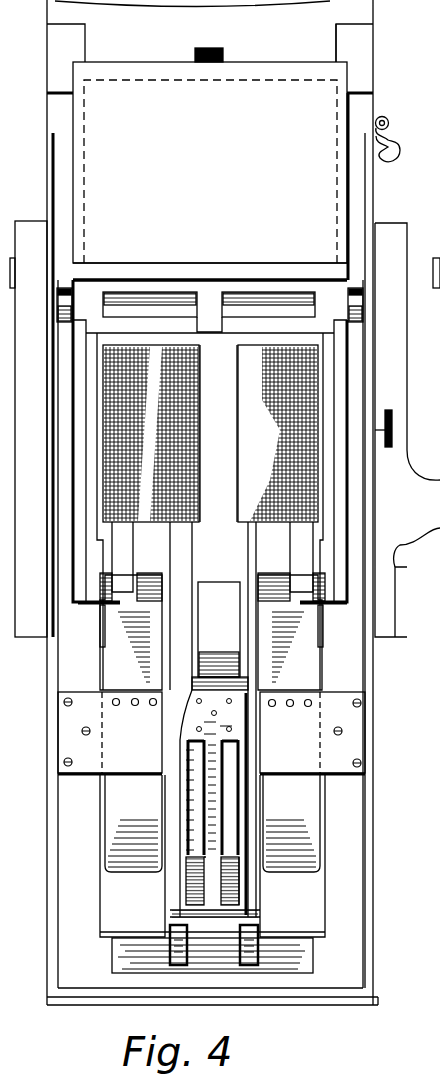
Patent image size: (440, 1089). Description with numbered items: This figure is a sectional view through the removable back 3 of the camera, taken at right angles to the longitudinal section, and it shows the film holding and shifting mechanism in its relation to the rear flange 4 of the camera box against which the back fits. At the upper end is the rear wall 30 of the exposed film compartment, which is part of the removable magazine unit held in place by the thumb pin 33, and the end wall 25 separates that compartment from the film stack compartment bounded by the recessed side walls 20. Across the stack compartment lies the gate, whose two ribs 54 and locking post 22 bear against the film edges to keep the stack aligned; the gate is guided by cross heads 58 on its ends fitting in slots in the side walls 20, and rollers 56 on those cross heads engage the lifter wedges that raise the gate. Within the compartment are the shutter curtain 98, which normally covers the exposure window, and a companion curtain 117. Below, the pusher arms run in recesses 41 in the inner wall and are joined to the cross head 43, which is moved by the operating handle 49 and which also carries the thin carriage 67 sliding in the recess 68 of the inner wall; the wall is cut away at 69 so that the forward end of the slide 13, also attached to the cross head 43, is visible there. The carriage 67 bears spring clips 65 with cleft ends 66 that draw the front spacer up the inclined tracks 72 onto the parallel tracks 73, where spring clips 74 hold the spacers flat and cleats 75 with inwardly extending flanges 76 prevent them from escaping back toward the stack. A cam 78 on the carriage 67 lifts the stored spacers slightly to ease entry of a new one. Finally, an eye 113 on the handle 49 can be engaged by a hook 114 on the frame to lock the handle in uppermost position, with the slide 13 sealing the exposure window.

The removable back 3 is at (378, 72).
The rear flange 4 is at (397, 227).
The slide 13 is at (215, 657).
The side walls 20 is at (78, 373).
The locking post 22 is at (209, 312).
The end wall 25 is at (139, 270).
The rear wall 30 is at (340, 190).
The thumb pin 33 is at (208, 47).
The recesses 41 is at (150, 557).
The cross head 43 is at (305, 962).
The operating handle 49 is at (439, 560).
The ribs 54 is at (96, 326).
The rollers 56 is at (57, 310).
The cross heads 58 is at (78, 283).
The spring clips 65 is at (190, 877).
The cleft ends 66 is at (182, 908).
The carriage 67 is at (242, 905).
The recess 68 is at (196, 561).
The cut away portion 69 is at (220, 592).
The inclined tracks 72 is at (112, 673).
The parallel tracks 73 is at (114, 897).
The spring clips 74 is at (114, 816).
The cleats 75 is at (100, 630).
The flanges 76 is at (103, 606).
The cam 78 is at (180, 965).
The curtain 98 is at (120, 422).
The eye 113 is at (389, 410).
The hook 114 is at (398, 142).
The coil 117 is at (259, 433).